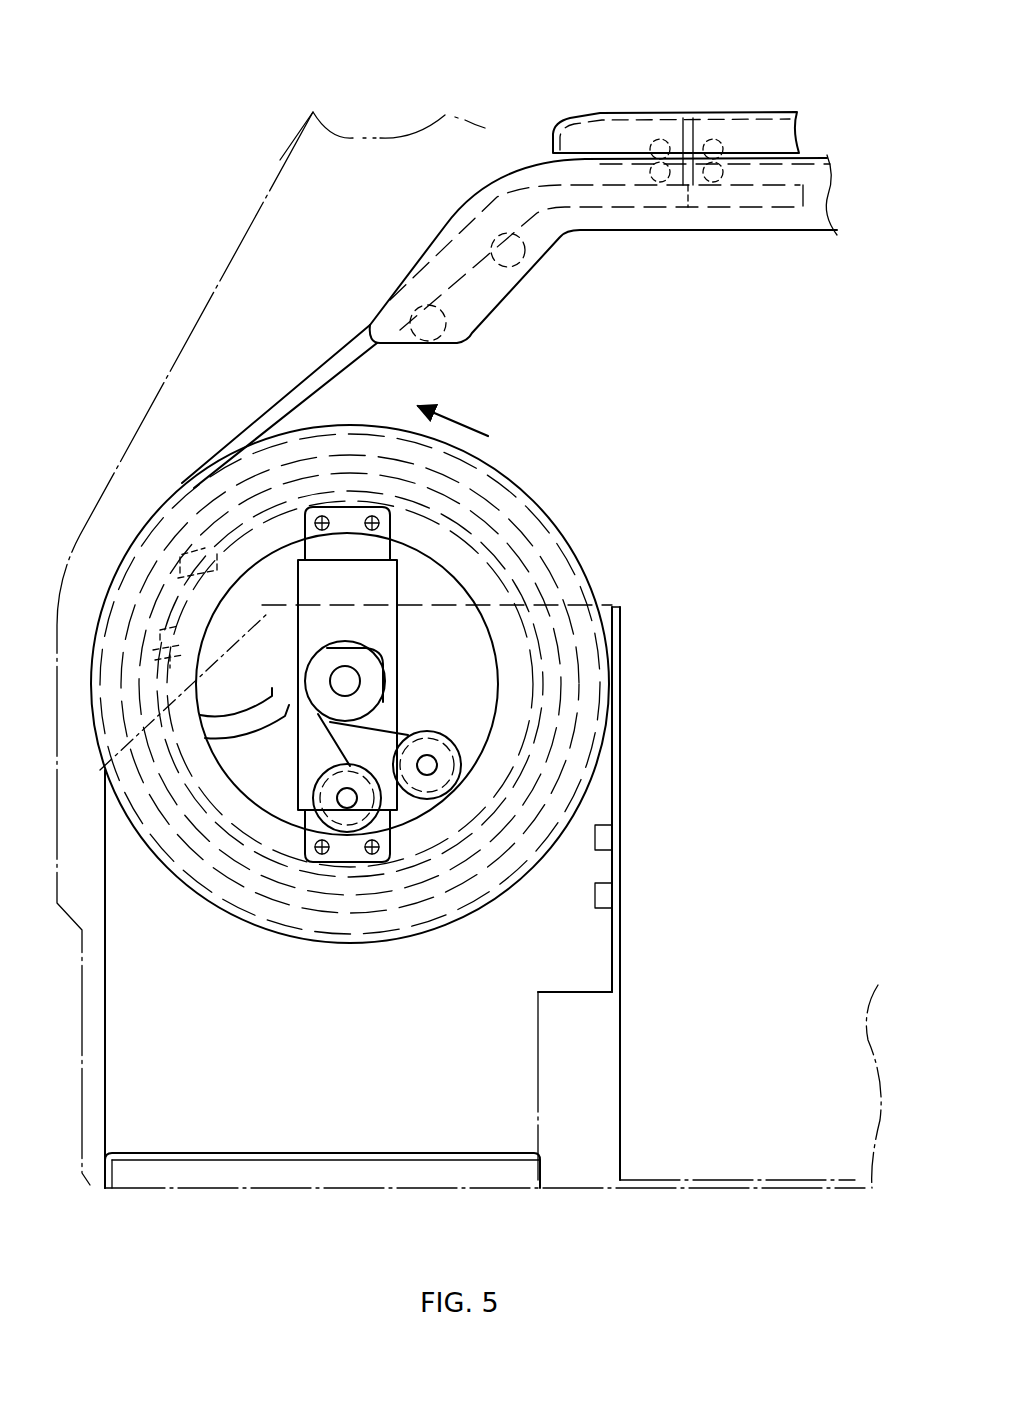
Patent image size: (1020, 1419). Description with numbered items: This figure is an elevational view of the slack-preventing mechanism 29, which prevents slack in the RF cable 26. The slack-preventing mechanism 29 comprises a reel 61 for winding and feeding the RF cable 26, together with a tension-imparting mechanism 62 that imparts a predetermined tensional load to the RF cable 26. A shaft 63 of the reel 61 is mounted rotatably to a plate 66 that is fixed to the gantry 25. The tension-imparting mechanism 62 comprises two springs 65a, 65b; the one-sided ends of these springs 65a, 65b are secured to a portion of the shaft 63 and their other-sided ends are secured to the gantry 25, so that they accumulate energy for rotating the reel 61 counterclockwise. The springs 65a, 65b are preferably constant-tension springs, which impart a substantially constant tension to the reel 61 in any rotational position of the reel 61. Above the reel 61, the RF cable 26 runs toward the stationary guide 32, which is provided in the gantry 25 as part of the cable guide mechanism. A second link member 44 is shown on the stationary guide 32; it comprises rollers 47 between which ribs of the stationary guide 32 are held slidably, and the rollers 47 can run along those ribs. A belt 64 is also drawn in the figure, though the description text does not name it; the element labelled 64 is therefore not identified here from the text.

The gantry 25 is at (387, 132).
The RF cable 26 is at (320, 357).
The slack-preventing mechanism 29 is at (585, 448).
The stationary guide 32 is at (830, 153).
The second link member 44 is at (738, 112).
The rollers 47 is at (652, 170).
The reel 61 is at (565, 532).
The tension-imparting mechanism 62 is at (420, 712).
The shaft 63 is at (330, 680).
The belt 64 is at (380, 706).
The spring 65a is at (476, 727).
The spring 65b is at (316, 778).
The plate 66 is at (105, 997).